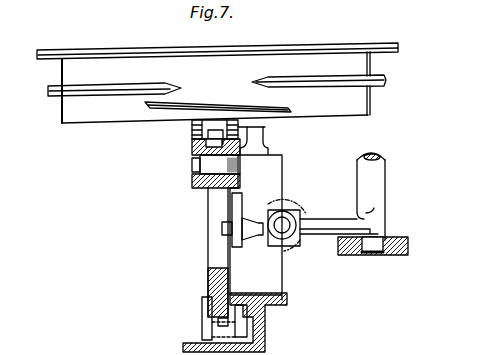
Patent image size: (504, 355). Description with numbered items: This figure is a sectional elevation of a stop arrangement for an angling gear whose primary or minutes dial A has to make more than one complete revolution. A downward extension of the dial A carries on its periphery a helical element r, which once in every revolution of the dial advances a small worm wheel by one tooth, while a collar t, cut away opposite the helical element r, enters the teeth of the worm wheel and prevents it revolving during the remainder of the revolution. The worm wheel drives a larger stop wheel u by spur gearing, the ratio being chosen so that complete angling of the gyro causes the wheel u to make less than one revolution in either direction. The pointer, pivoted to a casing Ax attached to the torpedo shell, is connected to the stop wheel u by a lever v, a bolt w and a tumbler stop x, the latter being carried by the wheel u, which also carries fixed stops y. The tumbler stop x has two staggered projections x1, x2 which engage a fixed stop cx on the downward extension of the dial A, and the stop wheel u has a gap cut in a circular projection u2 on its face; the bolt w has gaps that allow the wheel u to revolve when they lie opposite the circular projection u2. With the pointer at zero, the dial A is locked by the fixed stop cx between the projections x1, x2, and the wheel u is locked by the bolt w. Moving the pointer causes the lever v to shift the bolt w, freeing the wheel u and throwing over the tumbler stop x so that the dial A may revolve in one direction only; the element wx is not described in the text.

The primary or minutes dial A is at (257, 48).
The collar t is at (104, 88).
The helical element r is at (210, 102).
The projection of tumbler stop x1 is at (192, 125).
The fixed stop cx is at (193, 142).
The projection of tumbler stop x2 is at (262, 121).
The tumbler stop x is at (237, 180).
The bolt w is at (294, 216).
The lever v is at (319, 230).
The post wx is at (386, 236).
The casing Ax is at (400, 253).
The stop wheel u is at (208, 280).
The circular projection u2 is at (272, 304).
The fixed stops y is at (207, 337).